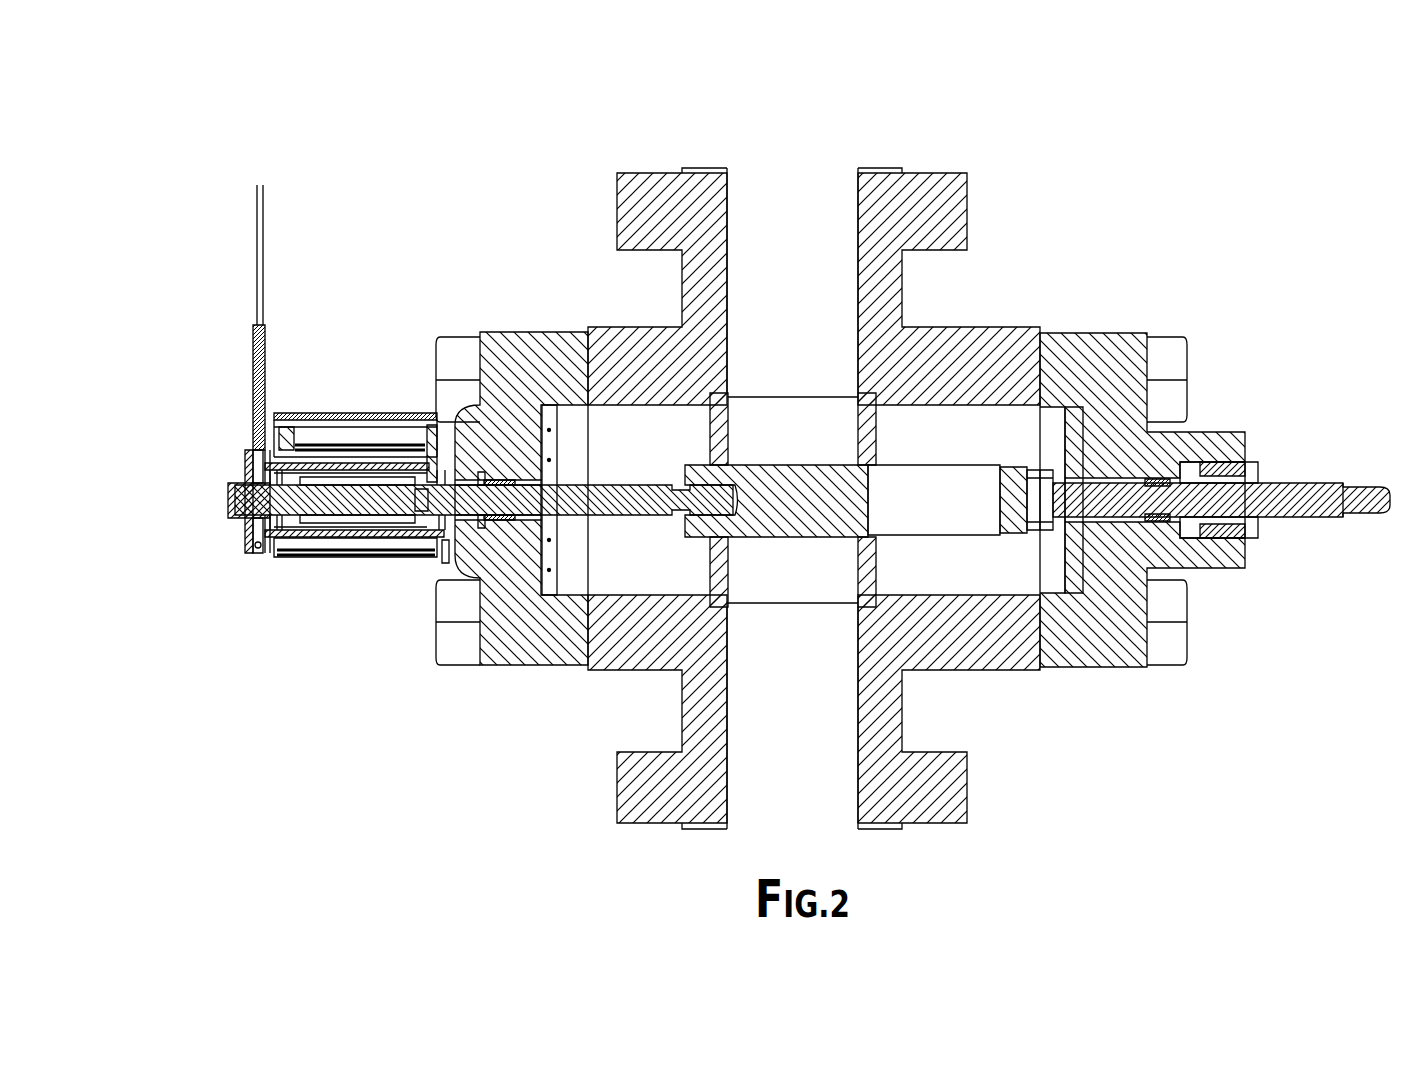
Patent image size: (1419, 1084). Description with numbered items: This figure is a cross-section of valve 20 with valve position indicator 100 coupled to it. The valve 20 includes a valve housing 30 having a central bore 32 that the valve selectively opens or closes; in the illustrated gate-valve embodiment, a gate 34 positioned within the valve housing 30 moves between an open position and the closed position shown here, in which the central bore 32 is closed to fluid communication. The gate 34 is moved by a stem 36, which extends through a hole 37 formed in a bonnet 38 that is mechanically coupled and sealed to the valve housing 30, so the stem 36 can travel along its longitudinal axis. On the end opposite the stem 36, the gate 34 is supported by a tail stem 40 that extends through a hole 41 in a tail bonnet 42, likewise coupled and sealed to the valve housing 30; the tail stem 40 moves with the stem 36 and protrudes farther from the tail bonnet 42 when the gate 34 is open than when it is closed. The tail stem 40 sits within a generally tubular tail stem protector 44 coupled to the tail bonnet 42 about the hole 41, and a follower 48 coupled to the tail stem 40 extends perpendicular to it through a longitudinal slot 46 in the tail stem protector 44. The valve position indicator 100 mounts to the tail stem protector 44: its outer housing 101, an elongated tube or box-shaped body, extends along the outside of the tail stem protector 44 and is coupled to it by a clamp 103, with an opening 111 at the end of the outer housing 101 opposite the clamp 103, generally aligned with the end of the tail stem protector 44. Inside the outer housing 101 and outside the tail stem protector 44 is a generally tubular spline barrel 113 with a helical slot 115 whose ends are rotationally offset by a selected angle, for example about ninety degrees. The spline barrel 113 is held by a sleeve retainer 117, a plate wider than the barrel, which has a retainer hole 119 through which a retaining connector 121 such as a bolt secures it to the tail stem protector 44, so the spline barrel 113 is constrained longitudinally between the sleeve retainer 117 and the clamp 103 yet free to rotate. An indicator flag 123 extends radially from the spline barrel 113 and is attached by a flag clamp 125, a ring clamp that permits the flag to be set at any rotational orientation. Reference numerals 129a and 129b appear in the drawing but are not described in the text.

The valve 20 is at (1086, 146).
The valve housing 30 is at (993, 327).
The central bore 32 is at (799, 317).
The gate 34 is at (957, 465).
The stem 36 is at (1302, 518).
The hole 37 is at (1165, 478).
The bonnet 38 is at (1117, 668).
The tail stem 40 is at (636, 515).
The hole 41 is at (503, 490).
The tail bonnet 42 is at (495, 668).
The tail stem protector 44 is at (305, 545).
The slot 46 is at (333, 478).
The follower 48 is at (402, 472).
The valve position indicator 100 is at (322, 494).
The outer housing 101 is at (390, 555).
The clamp 103 is at (430, 556).
The opening 111 is at (290, 553).
The spline barrel 113 is at (355, 555).
The helical slot 115 is at (393, 445).
The sleeve retainer 117 is at (243, 535).
The retainer hole 119 is at (243, 490).
The retaining connector 121 is at (226, 498).
The indicator flag 123 is at (256, 215).
The flag clamp 125 is at (258, 553).
The lower housing wall 129a is at (412, 450).
The upper housing wall 129b is at (303, 414).